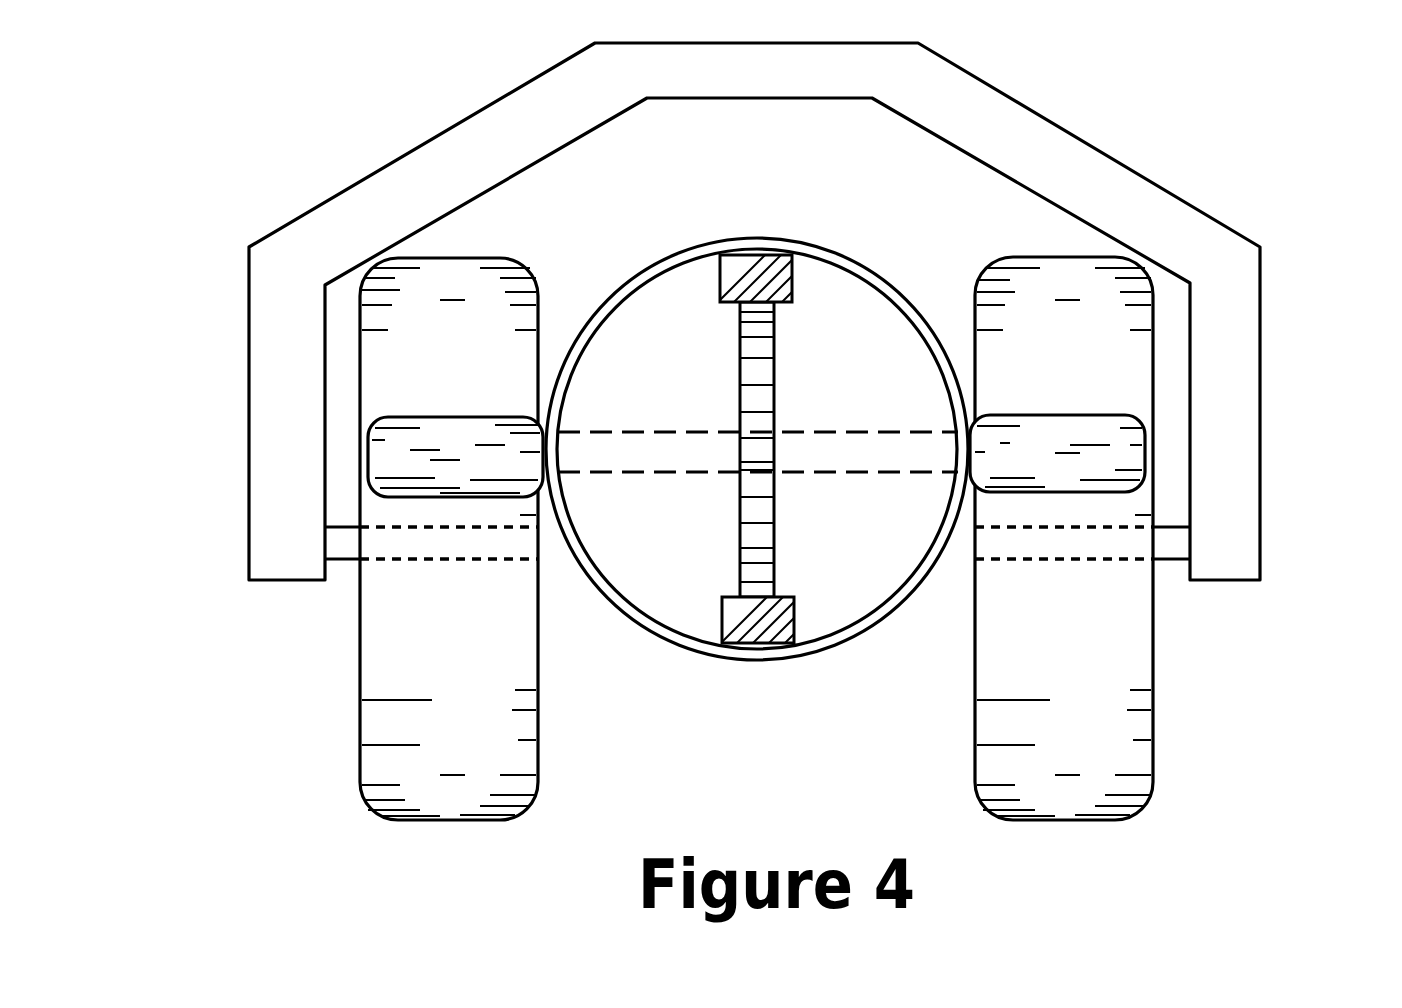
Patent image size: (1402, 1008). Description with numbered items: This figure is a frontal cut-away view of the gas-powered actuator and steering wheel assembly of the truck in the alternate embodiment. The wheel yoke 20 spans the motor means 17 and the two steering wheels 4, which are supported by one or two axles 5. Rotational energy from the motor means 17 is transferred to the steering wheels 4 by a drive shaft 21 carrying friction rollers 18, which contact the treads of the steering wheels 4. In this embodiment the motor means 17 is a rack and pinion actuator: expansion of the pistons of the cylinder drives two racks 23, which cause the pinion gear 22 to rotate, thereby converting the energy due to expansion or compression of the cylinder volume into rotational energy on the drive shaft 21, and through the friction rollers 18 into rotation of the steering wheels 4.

The steering wheels 4 is at (443, 702).
The axles 5 is at (342, 545).
The motor means 17 is at (875, 272).
The friction rollers 18 is at (408, 470).
The wheel yoke 20 is at (273, 358).
The drive shaft 21 is at (636, 442).
The pinion gear 22 is at (756, 400).
The racks 23 is at (745, 255).